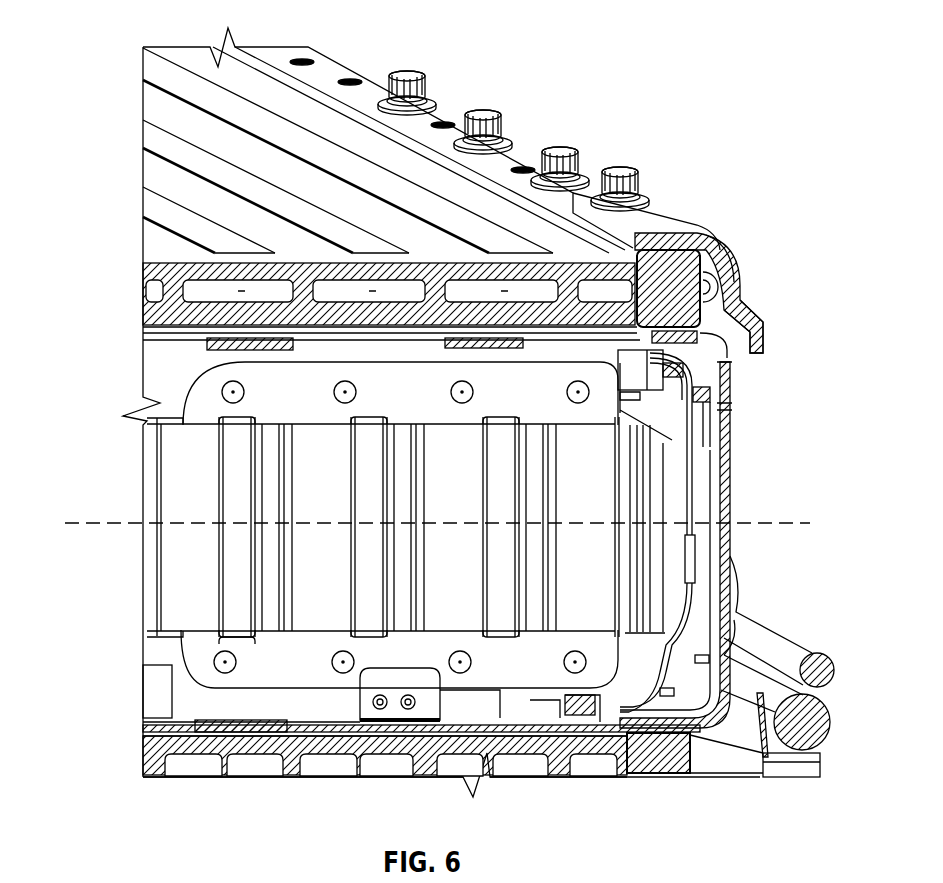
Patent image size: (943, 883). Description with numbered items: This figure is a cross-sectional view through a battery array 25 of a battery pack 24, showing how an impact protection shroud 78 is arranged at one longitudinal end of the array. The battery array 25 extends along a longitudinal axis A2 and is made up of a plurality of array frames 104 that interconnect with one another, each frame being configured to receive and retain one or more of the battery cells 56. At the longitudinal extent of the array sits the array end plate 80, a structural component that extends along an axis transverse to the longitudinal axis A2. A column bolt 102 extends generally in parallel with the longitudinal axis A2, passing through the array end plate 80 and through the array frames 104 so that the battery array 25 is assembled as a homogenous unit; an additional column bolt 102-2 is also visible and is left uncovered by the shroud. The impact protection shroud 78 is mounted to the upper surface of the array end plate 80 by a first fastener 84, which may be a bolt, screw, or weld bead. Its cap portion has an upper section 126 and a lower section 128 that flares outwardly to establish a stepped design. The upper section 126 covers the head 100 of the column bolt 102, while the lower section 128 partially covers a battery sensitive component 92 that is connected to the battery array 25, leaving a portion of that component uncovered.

The battery pack 24 is at (137, 36).
The battery array 25 is at (190, 66).
The array end plate 80 is at (327, 73).
The first fastener 84 is at (623, 172).
The impact protection shroud 78 is at (703, 228).
The upper section 126 is at (745, 252).
The head of column bolt 100 is at (712, 290).
The lower section 128 is at (762, 325).
The array frames 104 is at (172, 278).
The column bolt 102 is at (387, 327).
The column bolt 102-2 is at (224, 761).
The battery cells 56 is at (304, 546).
The battery sensitive component 92 is at (445, 708).
The longitudinal axis A2 is at (98, 526).